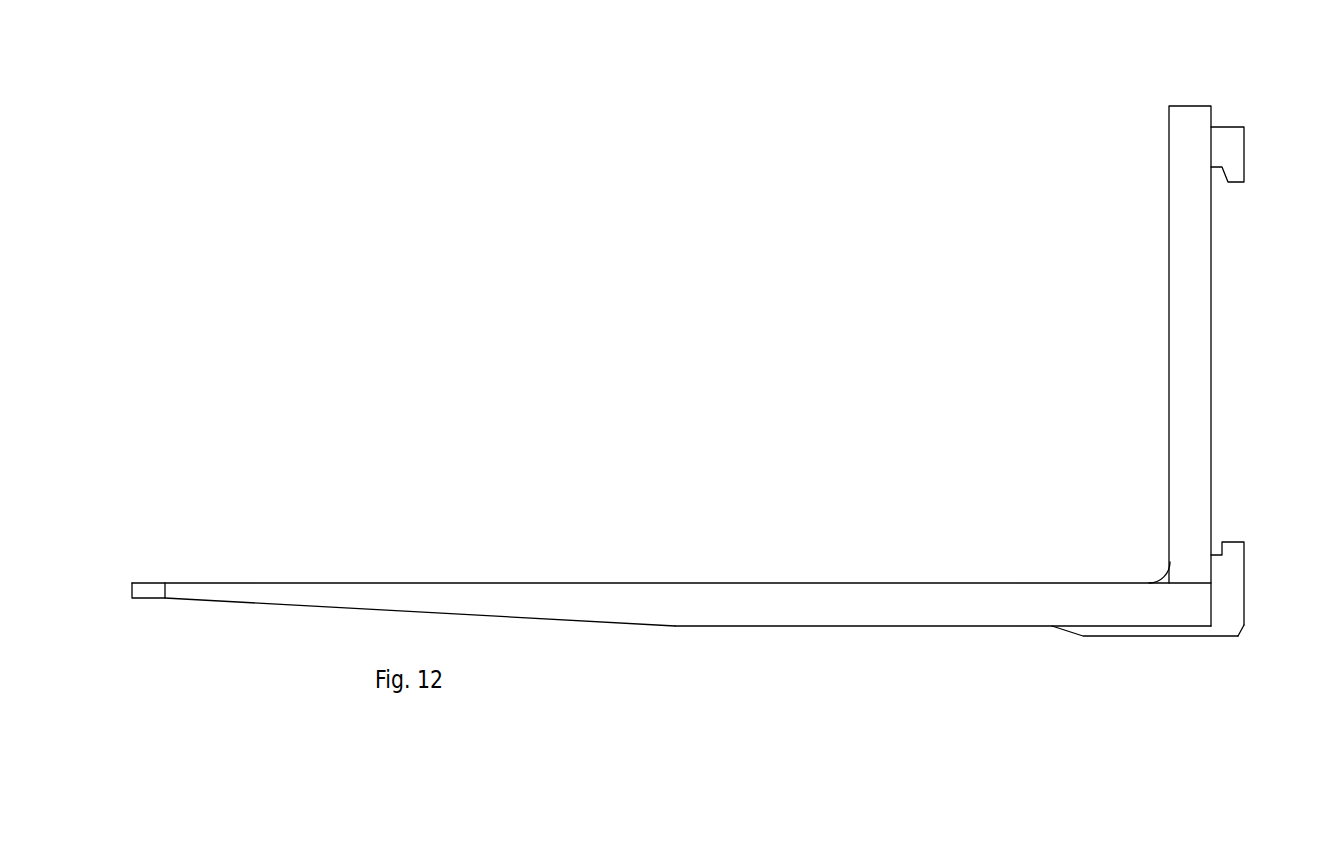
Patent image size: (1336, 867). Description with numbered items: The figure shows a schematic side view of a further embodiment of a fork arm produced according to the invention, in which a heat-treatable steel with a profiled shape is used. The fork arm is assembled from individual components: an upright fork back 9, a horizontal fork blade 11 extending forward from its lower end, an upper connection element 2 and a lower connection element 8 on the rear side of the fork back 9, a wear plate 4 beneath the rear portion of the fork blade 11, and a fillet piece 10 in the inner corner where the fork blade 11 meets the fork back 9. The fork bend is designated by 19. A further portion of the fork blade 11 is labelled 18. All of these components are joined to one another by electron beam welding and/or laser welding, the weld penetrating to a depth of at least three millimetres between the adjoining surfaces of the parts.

The upper connection element 2 is at (1229, 145).
The wear plate 4 is at (1166, 630).
The lower connection element 8 is at (1223, 593).
The fork back 9 is at (1188, 321).
The fillet piece 10 is at (1160, 570).
The fork blade 11 is at (657, 597).
The blade heel portion 18 is at (1036, 603).
The fork bend 19 is at (1214, 603).